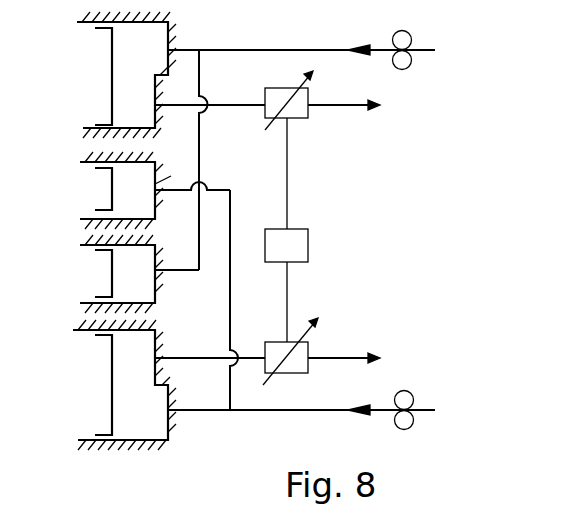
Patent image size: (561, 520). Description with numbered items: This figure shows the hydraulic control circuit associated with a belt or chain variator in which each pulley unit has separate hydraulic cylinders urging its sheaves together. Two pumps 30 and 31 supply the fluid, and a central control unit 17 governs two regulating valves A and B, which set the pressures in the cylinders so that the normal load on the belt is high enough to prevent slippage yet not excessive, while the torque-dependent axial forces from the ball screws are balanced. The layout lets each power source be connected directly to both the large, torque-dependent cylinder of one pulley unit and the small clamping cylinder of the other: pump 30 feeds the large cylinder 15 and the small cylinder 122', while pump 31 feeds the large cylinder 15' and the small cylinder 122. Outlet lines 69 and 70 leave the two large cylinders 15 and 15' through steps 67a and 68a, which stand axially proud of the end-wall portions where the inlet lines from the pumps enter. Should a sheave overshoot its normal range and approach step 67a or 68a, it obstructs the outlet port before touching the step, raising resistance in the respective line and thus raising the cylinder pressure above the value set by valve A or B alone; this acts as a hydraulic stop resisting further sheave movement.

The cylinder 15 is at (120, 75).
The step 67a is at (155, 95).
The outlet line 69 is at (238, 100).
The pump 30 is at (409, 34).
The control valve A is at (298, 122).
The central control unit 17 is at (308, 243).
The cylinder 122 is at (134, 190).
The cylinder 122' is at (113, 274).
The outlet line 70 is at (192, 352).
The step 68a is at (155, 345).
The cylinder 15' is at (111, 385).
The control valve B is at (295, 376).
The pump 31 is at (411, 394).